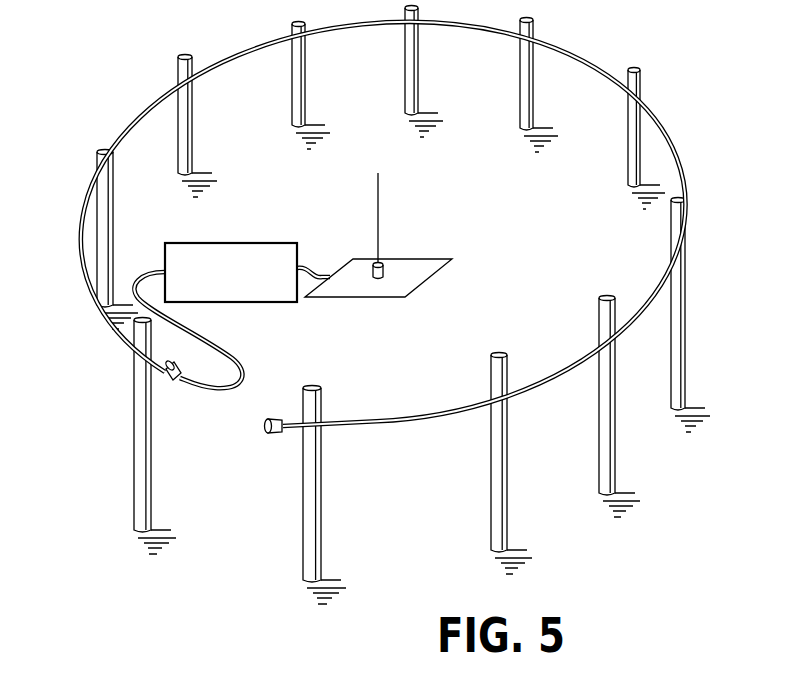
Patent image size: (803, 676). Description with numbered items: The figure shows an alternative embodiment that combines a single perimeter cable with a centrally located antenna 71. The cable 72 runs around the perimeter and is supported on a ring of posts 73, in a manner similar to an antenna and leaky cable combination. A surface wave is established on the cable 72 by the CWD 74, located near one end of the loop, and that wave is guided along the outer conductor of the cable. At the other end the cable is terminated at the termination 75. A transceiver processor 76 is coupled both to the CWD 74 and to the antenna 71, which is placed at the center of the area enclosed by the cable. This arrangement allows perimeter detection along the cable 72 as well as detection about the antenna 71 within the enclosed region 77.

The antenna with ground plane panel 71 is at (381, 229).
The wire loop antenna 72 is at (242, 55).
The support posts 73 is at (420, 100).
The wire connector 74 is at (174, 385).
The wire connector 75 is at (267, 437).
The transceiver processor 76 is at (273, 243).
The enclosed area 77 is at (486, 301).